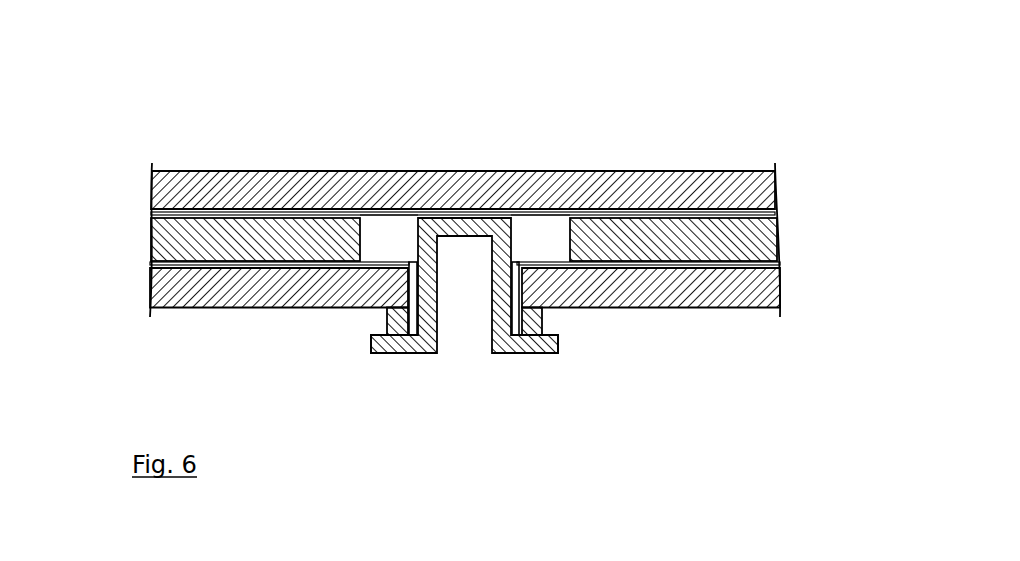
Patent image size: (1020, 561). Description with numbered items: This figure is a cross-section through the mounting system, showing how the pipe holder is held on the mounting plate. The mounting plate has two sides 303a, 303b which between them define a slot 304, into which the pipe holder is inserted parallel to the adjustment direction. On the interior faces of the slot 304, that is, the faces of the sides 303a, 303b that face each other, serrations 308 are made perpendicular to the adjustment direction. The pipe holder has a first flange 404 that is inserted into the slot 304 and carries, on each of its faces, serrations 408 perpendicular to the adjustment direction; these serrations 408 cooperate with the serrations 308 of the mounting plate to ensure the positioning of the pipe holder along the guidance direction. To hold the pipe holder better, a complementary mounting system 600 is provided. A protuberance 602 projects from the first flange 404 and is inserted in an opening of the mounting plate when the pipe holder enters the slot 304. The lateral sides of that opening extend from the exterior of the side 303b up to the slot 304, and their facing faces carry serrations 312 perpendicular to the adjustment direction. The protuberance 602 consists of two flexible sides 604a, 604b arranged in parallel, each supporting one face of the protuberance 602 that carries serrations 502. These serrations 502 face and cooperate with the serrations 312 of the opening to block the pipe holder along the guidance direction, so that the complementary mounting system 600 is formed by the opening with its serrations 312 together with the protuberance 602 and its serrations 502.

The side 303a is at (665, 185).
The side 303b is at (760, 295).
The slot 304 is at (553, 243).
The serrations 308 is at (372, 267).
The serrations 312 is at (405, 298).
The first flange 404 is at (150, 244).
The serrations 408 is at (157, 215).
The serrations 502 is at (521, 262).
The complementary mounting system 600 is at (608, 387).
The protuberance 602 is at (442, 403).
The flexible side 604a is at (432, 320).
The flexible side 604b is at (497, 313).